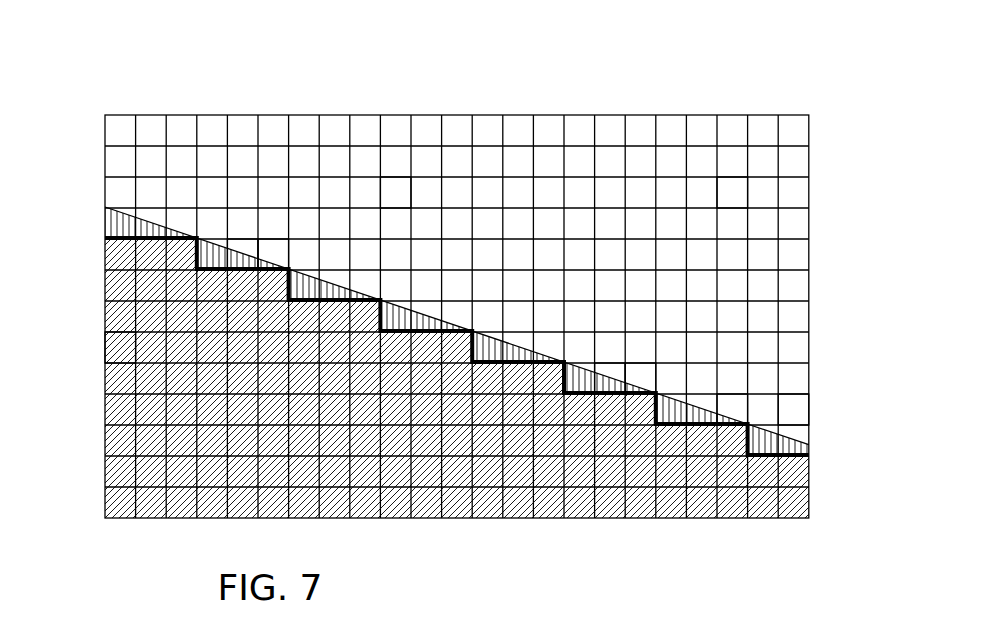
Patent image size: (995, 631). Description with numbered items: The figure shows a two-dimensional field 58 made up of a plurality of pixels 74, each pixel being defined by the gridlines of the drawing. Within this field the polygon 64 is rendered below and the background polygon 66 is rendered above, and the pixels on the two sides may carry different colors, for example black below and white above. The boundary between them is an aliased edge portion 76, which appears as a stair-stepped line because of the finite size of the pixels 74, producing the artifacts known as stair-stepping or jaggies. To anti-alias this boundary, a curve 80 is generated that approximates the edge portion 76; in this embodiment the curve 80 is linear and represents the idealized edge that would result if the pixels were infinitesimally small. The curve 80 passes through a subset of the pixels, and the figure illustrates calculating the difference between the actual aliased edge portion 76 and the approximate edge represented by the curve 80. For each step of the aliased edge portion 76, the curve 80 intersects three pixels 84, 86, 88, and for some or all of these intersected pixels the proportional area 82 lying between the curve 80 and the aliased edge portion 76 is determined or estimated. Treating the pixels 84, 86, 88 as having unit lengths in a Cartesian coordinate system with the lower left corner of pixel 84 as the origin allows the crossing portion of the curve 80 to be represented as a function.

The two-dimensional field 58 is at (243, 58).
The polygon 64 is at (367, 440).
The background polygon 66 is at (395, 197).
The pixels 74 is at (728, 195).
The edge portion 76 is at (717, 407).
The curve 80 is at (785, 420).
The proportional area 82 is at (103, 227).
The pixel 84 is at (222, 243).
The pixel 86 is at (238, 243).
The pixel 88 is at (273, 250).